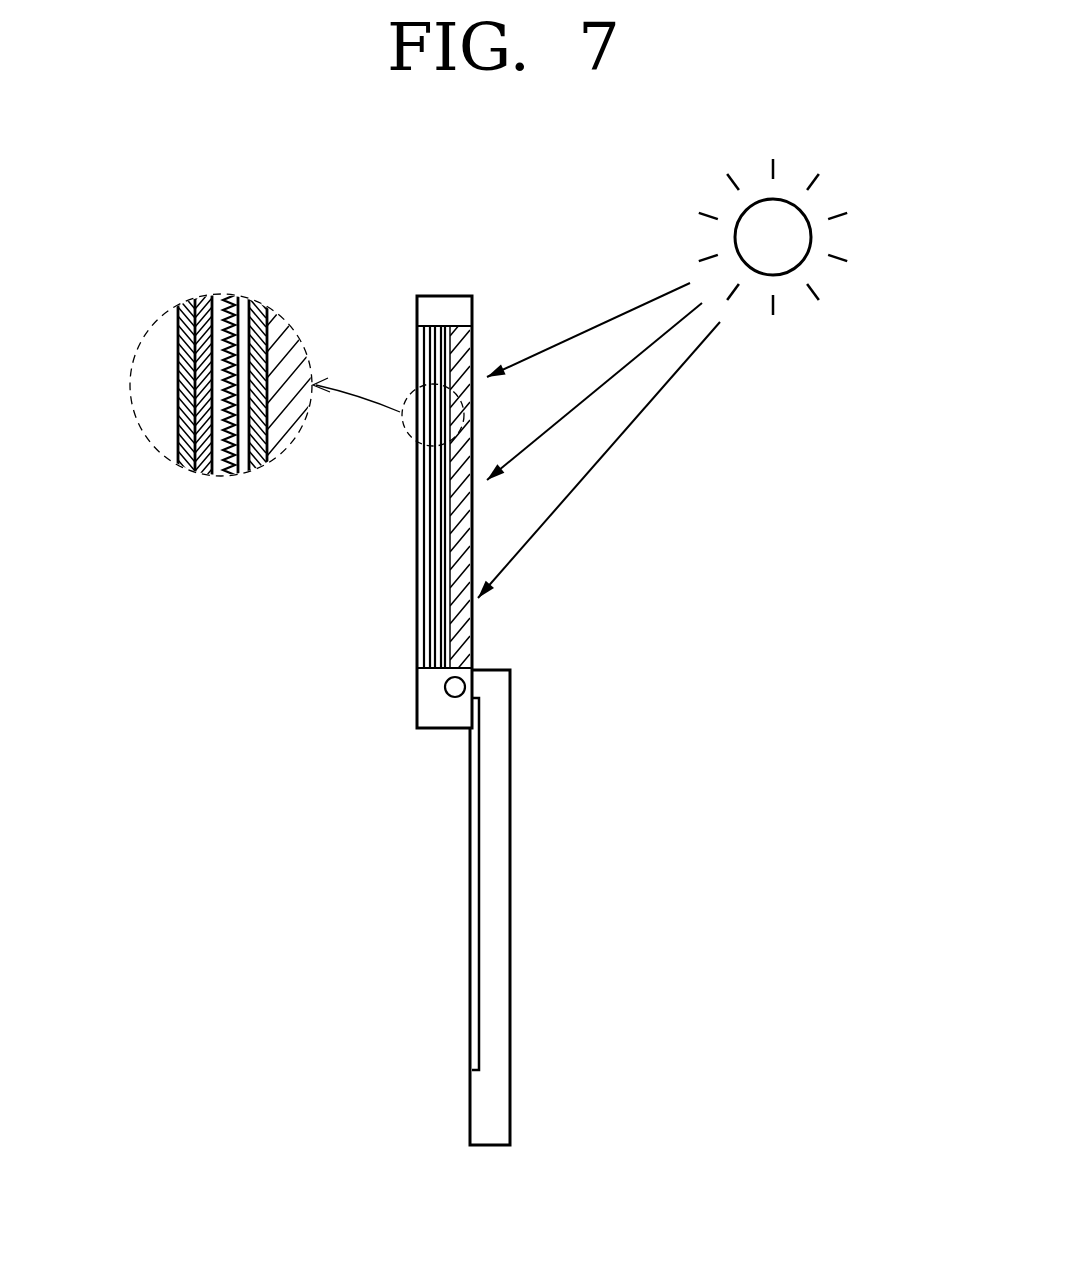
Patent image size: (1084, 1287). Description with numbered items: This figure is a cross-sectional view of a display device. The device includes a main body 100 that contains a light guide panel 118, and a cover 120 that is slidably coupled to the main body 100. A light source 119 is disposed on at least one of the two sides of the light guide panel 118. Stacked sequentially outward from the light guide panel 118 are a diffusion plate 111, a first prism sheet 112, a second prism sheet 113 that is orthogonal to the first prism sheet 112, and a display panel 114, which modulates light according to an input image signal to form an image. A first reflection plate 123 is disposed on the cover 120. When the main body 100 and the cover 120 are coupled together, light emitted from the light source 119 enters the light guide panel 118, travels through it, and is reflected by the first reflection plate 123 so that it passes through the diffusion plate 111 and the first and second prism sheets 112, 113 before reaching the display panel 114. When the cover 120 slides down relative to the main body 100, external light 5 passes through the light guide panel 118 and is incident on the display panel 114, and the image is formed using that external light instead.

The external light 5 is at (830, 278).
The main body 100 is at (447, 512).
The diffusion plate 111 is at (270, 460).
The first prism sheet 112 is at (233, 472).
The second prism sheet 113 is at (197, 455).
The display panel 114 is at (177, 418).
The light guide panel 118 is at (463, 630).
The light source 119 is at (456, 687).
The cover 120 is at (497, 915).
The first reflection plate 123 is at (475, 838).